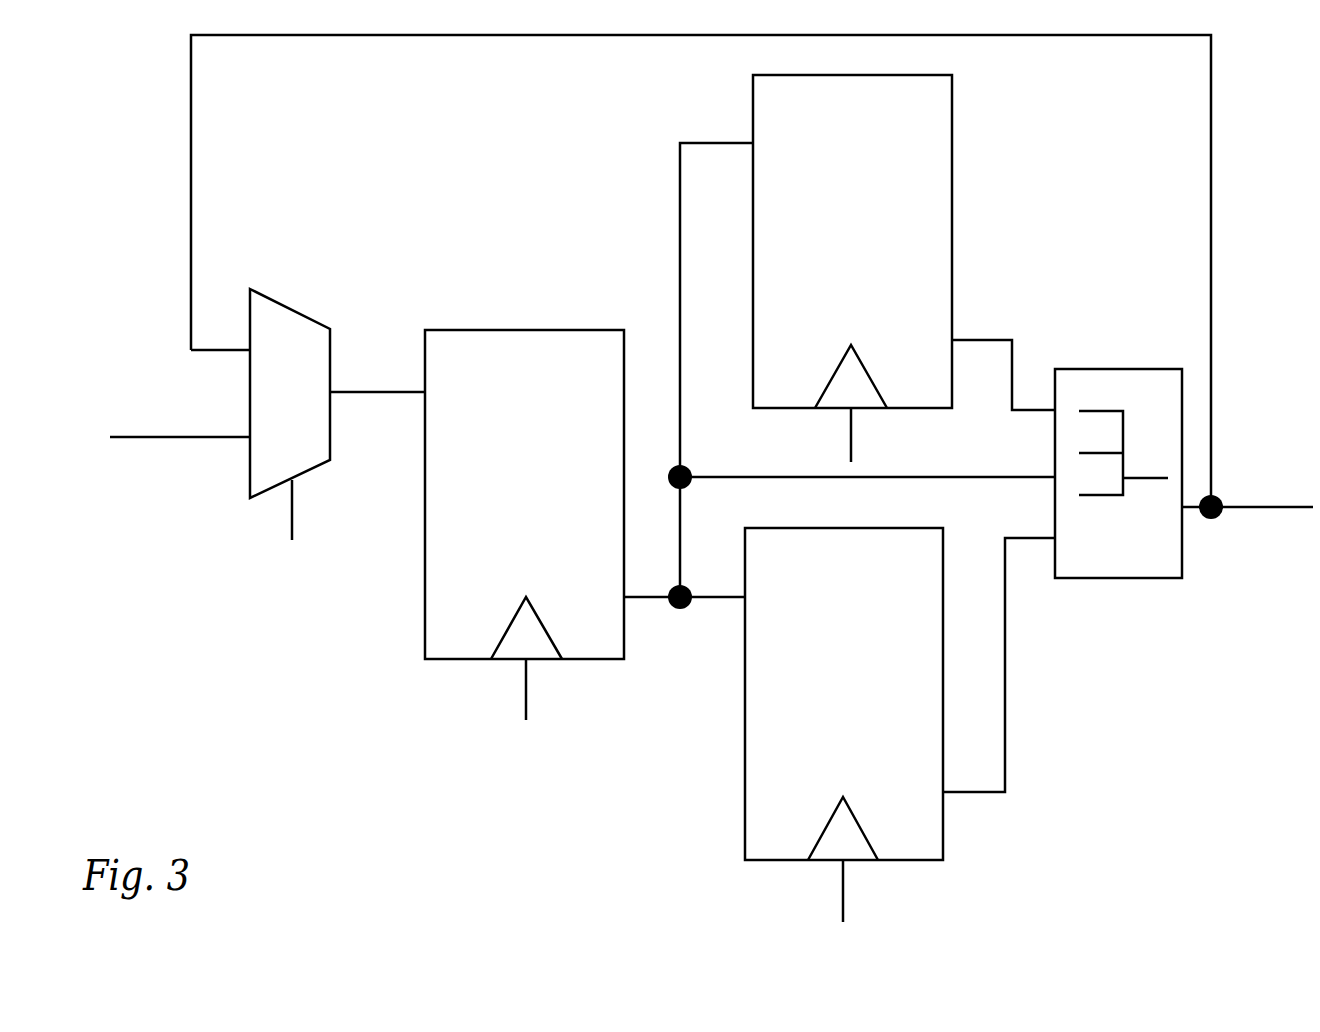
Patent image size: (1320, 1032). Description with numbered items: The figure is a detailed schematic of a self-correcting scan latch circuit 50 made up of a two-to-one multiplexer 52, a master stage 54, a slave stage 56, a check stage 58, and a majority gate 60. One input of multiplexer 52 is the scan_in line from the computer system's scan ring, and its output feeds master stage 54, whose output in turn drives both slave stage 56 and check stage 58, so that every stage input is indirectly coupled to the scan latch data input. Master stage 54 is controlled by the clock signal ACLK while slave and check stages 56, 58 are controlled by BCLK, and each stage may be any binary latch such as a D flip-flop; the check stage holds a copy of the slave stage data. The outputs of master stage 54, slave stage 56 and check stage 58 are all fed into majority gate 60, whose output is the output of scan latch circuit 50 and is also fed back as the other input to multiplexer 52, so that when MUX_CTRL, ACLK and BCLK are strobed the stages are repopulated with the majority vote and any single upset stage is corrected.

The scan latch circuit 50 is at (411, 850).
The 2-to-1 multiplexer 52 is at (275, 300).
The master stage 54 is at (607, 330).
The slave stage 56 is at (770, 860).
The check stage 58 is at (952, 140).
The majority gate 60 is at (1170, 578).